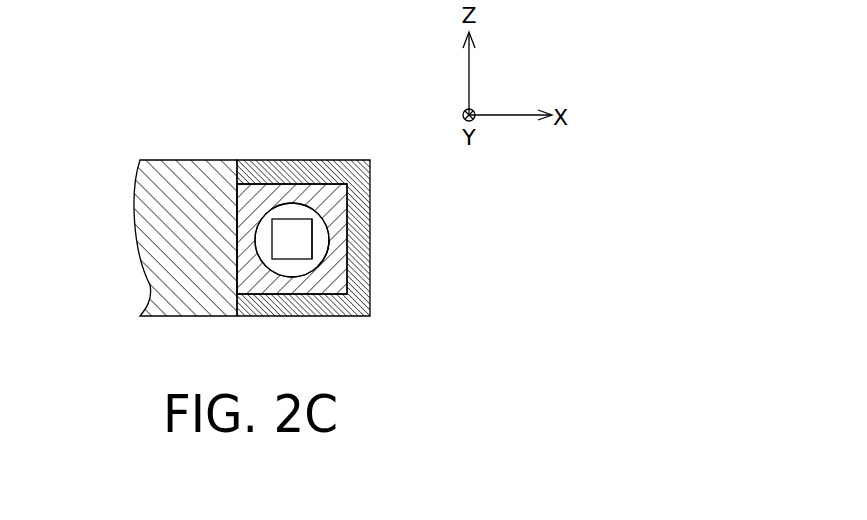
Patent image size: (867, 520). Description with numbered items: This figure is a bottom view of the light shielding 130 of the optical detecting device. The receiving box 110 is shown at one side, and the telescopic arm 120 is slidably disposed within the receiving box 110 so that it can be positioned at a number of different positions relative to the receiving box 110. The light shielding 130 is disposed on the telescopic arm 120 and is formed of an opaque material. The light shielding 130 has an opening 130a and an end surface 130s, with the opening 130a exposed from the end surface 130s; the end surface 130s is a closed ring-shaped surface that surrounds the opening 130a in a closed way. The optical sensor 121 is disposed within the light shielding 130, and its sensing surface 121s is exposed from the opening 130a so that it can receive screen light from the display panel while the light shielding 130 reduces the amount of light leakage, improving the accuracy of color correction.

The receiving box 110 is at (168, 248).
The telescopic arm 120 is at (325, 177).
The optical sensor 121 is at (311, 221).
The sensing surface 121s is at (296, 242).
The light shielding 130 is at (264, 198).
The end surface 130s is at (330, 265).
The opening 130a is at (292, 265).